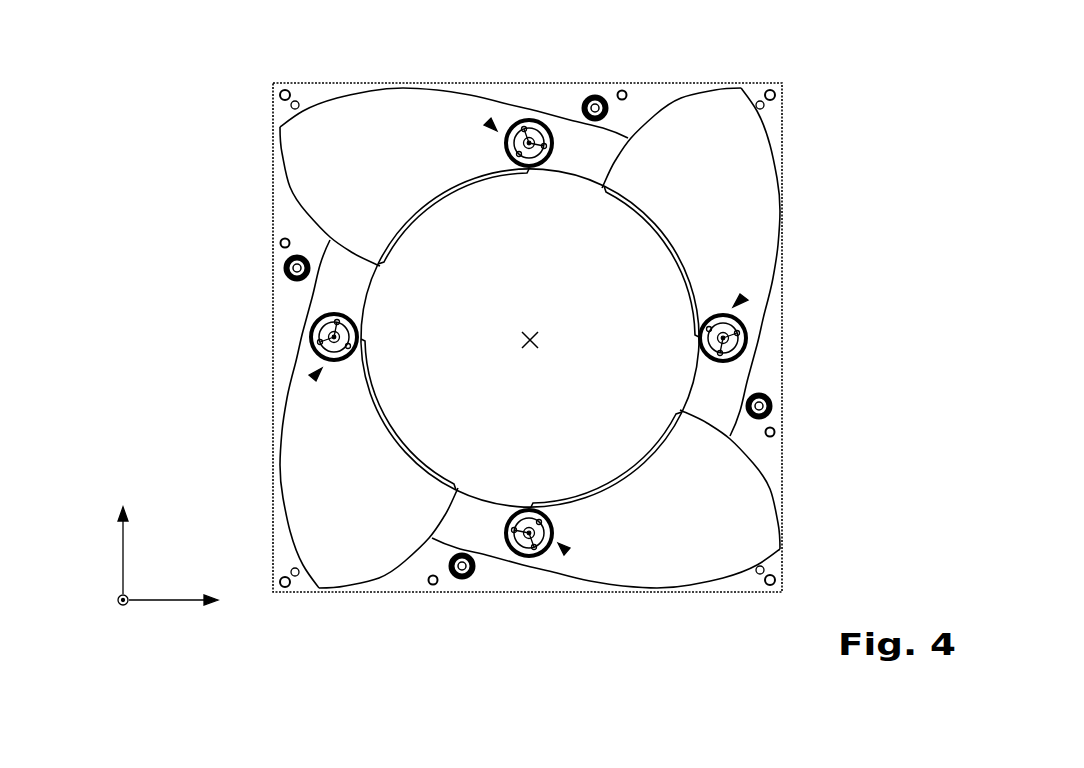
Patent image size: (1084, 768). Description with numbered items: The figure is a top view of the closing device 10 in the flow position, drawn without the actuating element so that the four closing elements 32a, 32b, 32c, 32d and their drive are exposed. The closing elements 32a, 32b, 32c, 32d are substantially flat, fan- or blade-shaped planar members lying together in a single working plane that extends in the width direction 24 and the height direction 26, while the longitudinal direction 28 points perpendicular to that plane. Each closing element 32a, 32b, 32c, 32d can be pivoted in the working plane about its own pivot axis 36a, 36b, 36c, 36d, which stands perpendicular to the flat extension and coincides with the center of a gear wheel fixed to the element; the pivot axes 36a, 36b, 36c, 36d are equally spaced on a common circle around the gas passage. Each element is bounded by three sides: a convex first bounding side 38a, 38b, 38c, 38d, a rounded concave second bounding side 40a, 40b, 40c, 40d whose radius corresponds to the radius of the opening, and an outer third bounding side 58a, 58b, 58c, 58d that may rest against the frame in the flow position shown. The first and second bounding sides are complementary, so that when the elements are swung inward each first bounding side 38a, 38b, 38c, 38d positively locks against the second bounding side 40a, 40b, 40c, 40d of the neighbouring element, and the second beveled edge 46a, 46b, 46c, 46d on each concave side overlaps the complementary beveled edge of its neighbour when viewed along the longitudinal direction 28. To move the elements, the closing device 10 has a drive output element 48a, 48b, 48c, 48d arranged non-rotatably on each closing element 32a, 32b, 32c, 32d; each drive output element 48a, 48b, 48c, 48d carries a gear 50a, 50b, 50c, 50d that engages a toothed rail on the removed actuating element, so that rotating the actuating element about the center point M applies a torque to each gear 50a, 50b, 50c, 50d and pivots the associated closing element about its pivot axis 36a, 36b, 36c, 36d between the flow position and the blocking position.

The closing device 10 is at (840, 99).
The width direction 24 is at (138, 605).
The height direction 26 is at (118, 594).
The longitudinal direction 28 is at (121, 607).
The closing element 32a is at (707, 222).
The closing element 32b is at (407, 149).
The closing element 32c is at (342, 454).
The closing element 32d is at (652, 518).
The pivot axis 36a is at (740, 342).
The pivot axis 36b is at (538, 132).
The pivot axis 36c is at (318, 328).
The pivot axis 36d is at (520, 560).
The first bounding side 38a is at (692, 92).
The first bounding side 38b is at (292, 197).
The first bounding side 38c is at (375, 578).
The first bounding side 38d is at (760, 472).
The second bounding side 40a is at (655, 250).
The second bounding side 40b is at (427, 217).
The second bounding side 40c is at (408, 442).
The second bounding side 40d is at (607, 475).
The second beveled edge 46a is at (634, 223).
The second beveled edge 46b is at (393, 252).
The second beveled edge 46c is at (453, 480).
The second beveled edge 46d is at (650, 443).
The drive output element 48a is at (745, 298).
The drive output element 48b is at (489, 124).
The drive output element 48c is at (312, 378).
The drive output element 48d is at (568, 551).
The gear 50a is at (786, 344).
The gear 50b is at (542, 87).
The gear 50c is at (270, 330).
The gear 50d is at (512, 589).
The third bounding side 58a is at (777, 200).
The third bounding side 58b is at (340, 93).
The third bounding side 58c is at (288, 460).
The third bounding side 58d is at (718, 580).